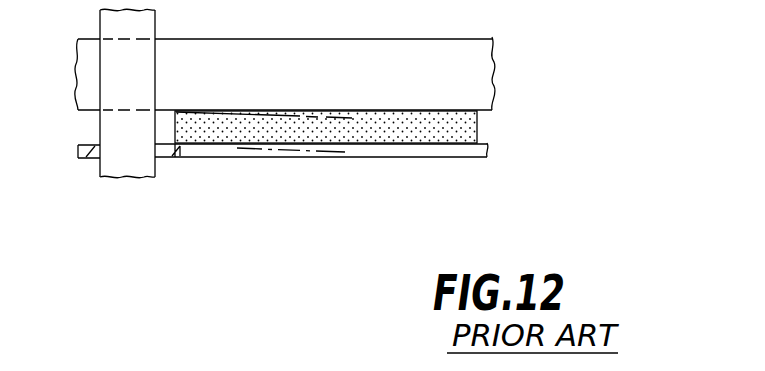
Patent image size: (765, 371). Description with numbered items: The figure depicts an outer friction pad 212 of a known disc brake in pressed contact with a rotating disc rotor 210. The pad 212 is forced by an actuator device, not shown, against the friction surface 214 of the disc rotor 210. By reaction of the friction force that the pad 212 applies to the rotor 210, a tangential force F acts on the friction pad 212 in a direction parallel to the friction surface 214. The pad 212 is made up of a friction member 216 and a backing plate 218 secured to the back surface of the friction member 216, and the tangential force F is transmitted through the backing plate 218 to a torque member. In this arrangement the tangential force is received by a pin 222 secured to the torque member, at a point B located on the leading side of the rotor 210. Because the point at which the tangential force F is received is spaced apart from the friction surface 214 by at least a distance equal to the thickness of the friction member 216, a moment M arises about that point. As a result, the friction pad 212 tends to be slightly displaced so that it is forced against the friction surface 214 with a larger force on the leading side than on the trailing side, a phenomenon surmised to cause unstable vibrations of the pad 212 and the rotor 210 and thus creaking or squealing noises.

The disc rotor 210 is at (480, 70).
The friction pad 212 is at (326, 165).
The friction surface 214 is at (410, 116).
The friction member 216 is at (271, 134).
The backing plate 218 is at (390, 148).
The pin 222 is at (127, 168).
The point B is at (103, 150).
The tangential force F is at (303, 108).
The moment M is at (543, 178).